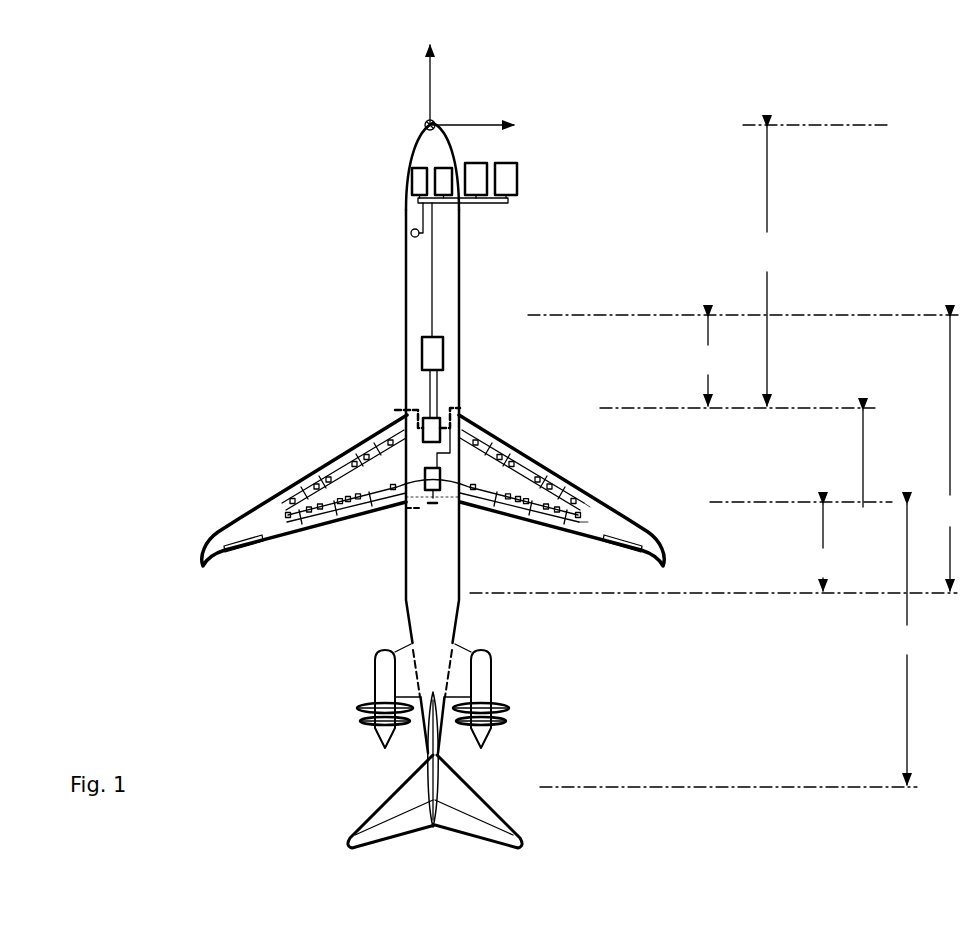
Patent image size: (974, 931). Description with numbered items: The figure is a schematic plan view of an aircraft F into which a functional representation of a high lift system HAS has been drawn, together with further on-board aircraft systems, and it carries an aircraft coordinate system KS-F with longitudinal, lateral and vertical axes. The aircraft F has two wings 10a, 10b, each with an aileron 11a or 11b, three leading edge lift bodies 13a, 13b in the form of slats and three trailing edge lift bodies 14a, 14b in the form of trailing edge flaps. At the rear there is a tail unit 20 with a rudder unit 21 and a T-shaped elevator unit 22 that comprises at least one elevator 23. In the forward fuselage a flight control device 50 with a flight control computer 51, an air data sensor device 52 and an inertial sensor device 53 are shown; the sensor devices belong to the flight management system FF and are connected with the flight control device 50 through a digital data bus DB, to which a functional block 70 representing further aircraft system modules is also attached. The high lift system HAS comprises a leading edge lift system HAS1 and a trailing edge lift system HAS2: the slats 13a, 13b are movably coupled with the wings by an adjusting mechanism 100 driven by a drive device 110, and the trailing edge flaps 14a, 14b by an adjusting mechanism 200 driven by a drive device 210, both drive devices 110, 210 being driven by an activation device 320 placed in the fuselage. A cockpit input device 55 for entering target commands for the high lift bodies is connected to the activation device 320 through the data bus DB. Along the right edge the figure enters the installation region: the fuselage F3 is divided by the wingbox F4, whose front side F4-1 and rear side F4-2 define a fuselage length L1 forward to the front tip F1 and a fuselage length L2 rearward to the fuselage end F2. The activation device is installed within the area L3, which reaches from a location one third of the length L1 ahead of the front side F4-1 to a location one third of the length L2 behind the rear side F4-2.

The wing 10a is at (268, 508).
The wing 10b is at (655, 557).
The aileron 11a is at (243, 550).
The aileron 11b is at (603, 540).
The leading edge lift bodies 13a is at (368, 446).
The leading edge lift bodies 13b is at (503, 443).
The trailing edge lift bodies 14a is at (298, 537).
The trailing edge lift bodies 14b is at (490, 505).
The tail unit 20 is at (486, 764).
The rudder unit 21 is at (425, 745).
The elevator unit 22 is at (500, 815).
The elevator 23 is at (477, 828).
The flight control device 50 is at (474, 213).
The flight control computer 51 is at (478, 165).
The air data sensor device 52 is at (412, 172).
The inertial sensor device 53 is at (440, 168).
The input device 55 is at (411, 233).
The functional block 70 is at (508, 174).
The adjusting mechanism 100 is at (597, 507).
The adjusting mechanism 200 is at (600, 522).
The drive device 110 is at (422, 428).
The drive device 210 is at (424, 496).
The activation device 320 is at (437, 358).
The digital data bus DB is at (495, 209).
The aircraft coordinate system KS-F is at (367, 63).
The aircraft F is at (628, 290).
The front tip of the aircraft F1 is at (403, 125).
The fuselage end F2 is at (416, 790).
The fuselage F3 is at (406, 297).
The wingbox F4 is at (451, 496).
The front side of the wingbox F4-1 is at (458, 407).
The rear side of the wingbox F4-2 is at (418, 500).
The flight management system FF is at (378, 200).
The high lift system HAS is at (243, 440).
The leading edge lift system HAS1 is at (336, 450).
The trailing edge lift system HAS2 is at (260, 522).
The fuselage length L1 is at (771, 317).
The fuselage length L2 is at (864, 644).
The installation area L3 is at (950, 454).